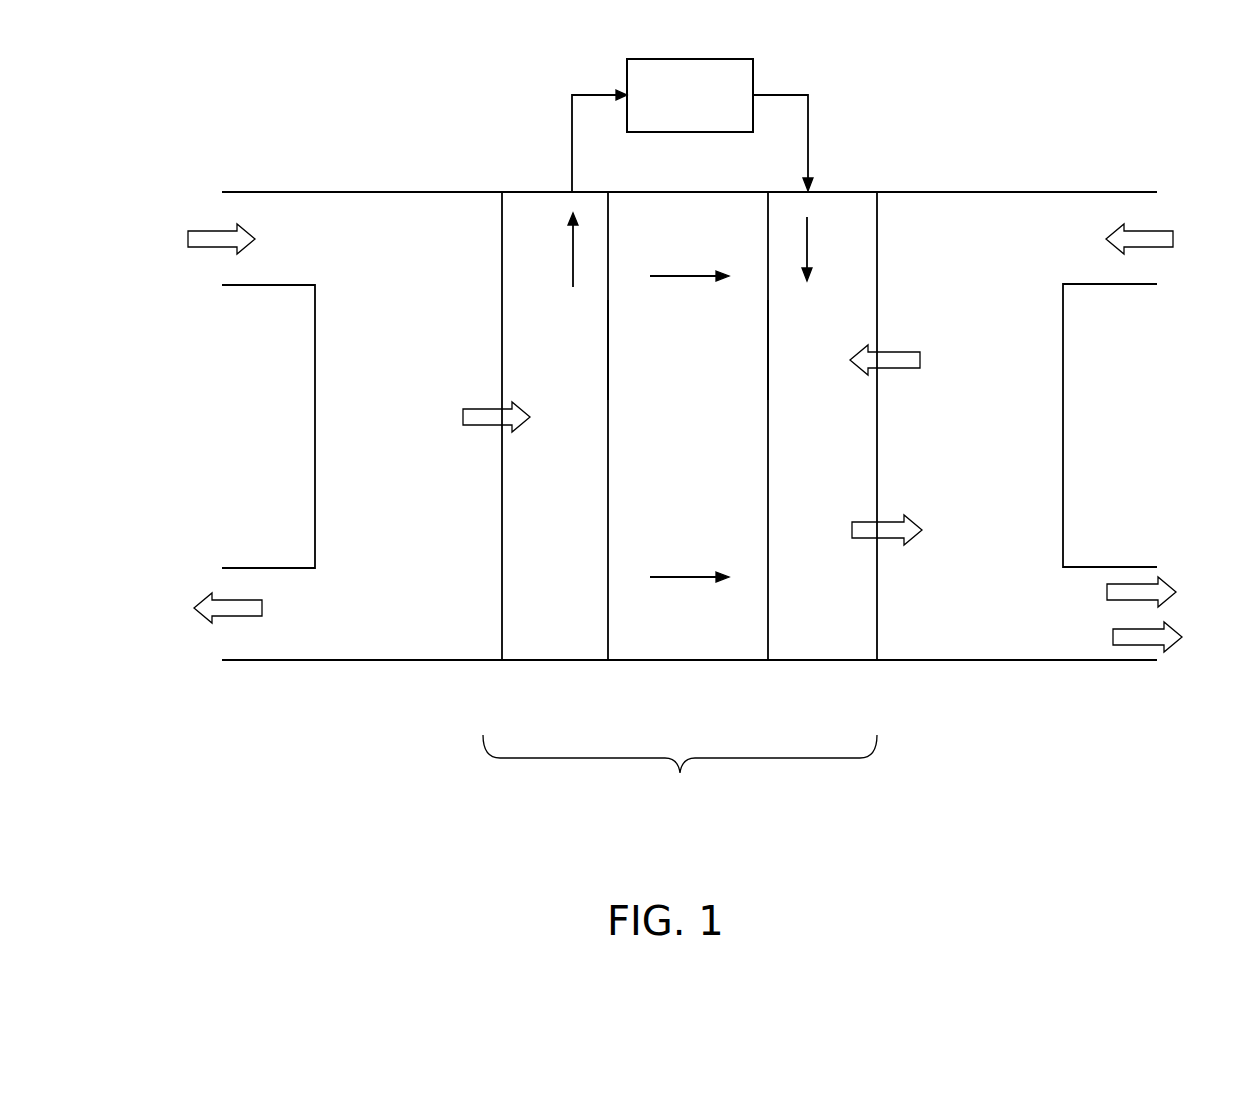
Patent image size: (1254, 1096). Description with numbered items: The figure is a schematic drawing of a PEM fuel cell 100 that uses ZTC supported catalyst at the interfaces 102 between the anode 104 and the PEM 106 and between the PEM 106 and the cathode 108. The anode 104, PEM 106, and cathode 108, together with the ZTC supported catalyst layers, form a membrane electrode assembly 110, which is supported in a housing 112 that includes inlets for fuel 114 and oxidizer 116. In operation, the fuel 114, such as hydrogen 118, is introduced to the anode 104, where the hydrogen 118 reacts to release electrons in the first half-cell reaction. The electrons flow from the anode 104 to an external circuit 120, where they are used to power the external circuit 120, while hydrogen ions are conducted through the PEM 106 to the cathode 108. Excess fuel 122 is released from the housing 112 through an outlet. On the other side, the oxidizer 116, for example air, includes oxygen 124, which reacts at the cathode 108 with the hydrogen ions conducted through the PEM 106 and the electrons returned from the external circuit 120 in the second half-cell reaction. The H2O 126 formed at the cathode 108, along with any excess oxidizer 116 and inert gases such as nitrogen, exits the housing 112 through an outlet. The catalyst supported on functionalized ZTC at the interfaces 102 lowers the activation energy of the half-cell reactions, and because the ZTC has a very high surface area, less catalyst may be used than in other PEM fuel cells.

The PEM fuel cell 100 is at (690, 886).
The interfaces 102 is at (768, 308).
The anode 104 is at (541, 662).
The PEM 106 is at (680, 662).
The cathode 108 is at (808, 662).
The membrane electrode assembly 110 is at (678, 775).
The housing 112 is at (405, 661).
The fuel 114 is at (195, 230).
The oxidizer 116 is at (1163, 228).
The hydrogen 118 is at (478, 407).
The external circuit 120 is at (662, 42).
The excess fuel 122 is at (220, 599).
The oxygen 124 is at (895, 370).
The H2O 126 is at (893, 520).